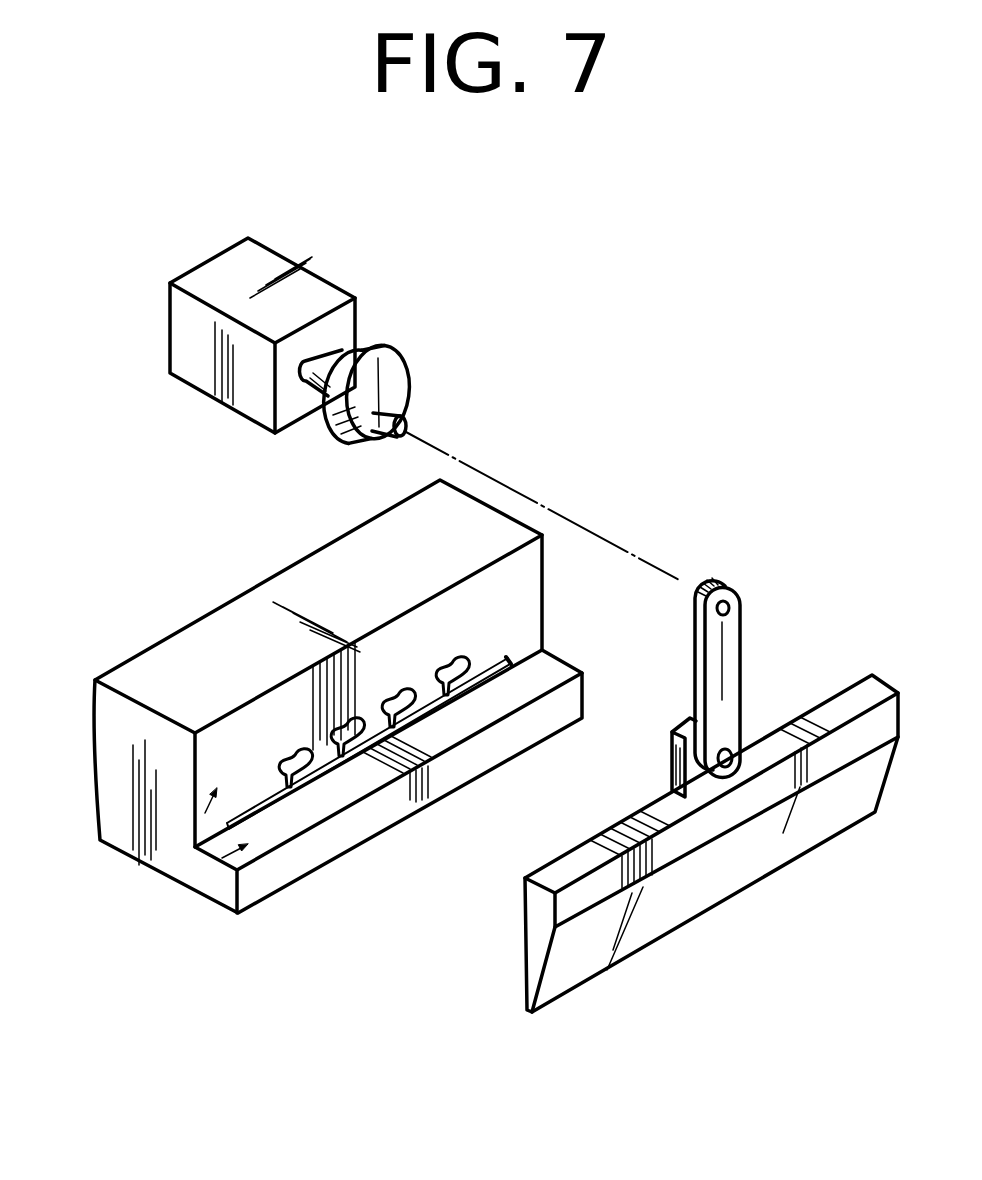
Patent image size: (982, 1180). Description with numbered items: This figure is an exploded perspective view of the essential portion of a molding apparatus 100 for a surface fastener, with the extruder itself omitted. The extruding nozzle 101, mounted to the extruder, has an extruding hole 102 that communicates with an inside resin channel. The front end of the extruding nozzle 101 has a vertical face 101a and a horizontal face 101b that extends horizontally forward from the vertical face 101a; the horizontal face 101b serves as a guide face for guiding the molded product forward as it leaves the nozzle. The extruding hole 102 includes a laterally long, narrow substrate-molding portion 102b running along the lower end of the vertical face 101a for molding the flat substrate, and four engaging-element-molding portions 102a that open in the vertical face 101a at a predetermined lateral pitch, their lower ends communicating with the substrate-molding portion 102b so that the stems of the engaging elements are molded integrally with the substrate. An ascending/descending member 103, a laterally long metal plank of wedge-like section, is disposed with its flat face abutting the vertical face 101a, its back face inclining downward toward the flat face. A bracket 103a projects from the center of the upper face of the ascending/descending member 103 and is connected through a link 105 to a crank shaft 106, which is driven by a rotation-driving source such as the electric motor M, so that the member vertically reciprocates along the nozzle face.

The sorting/conveying apparatus 100 is at (695, 413).
The extruding nozzle 101 is at (197, 650).
The vertical face 101a is at (170, 857).
The horizontal face 101b is at (223, 857).
The extruding hole 102 is at (348, 762).
The engaging-element-molding portions 102a is at (462, 662).
The substrate-molding portion 102b is at (473, 687).
The ascending/descending member 103 is at (682, 892).
The bracket 103a is at (680, 755).
The link 105 is at (728, 643).
The crank shaft 106 is at (395, 378).
The electric motor M is at (307, 292).